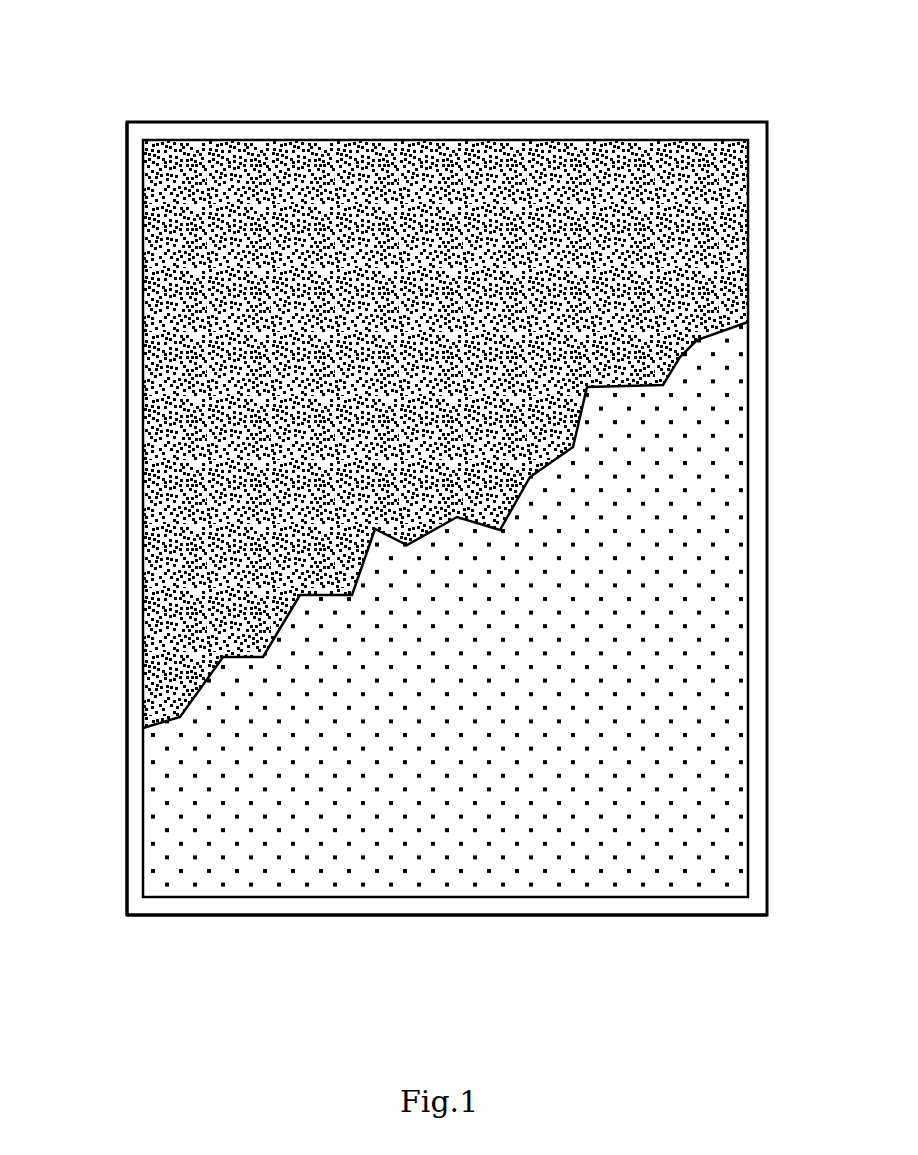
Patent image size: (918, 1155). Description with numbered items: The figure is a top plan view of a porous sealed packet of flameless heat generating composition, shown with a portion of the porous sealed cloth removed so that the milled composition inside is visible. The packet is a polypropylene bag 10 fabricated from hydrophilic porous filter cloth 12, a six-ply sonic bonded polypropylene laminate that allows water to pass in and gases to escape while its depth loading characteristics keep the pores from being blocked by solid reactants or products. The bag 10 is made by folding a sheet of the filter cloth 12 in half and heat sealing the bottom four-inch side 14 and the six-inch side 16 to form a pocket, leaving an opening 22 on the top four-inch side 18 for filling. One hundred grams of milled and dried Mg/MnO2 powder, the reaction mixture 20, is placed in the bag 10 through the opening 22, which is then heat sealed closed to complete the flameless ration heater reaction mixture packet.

The polypropylene bag 10 is at (453, 514).
The porous filter cloth 12 is at (678, 628).
The bottom side 14 is at (278, 915).
The six-inch side 16 is at (127, 551).
The top side 18 is at (501, 518).
The reaction mixture 20 is at (675, 263).
The opening 22 is at (172, 122).